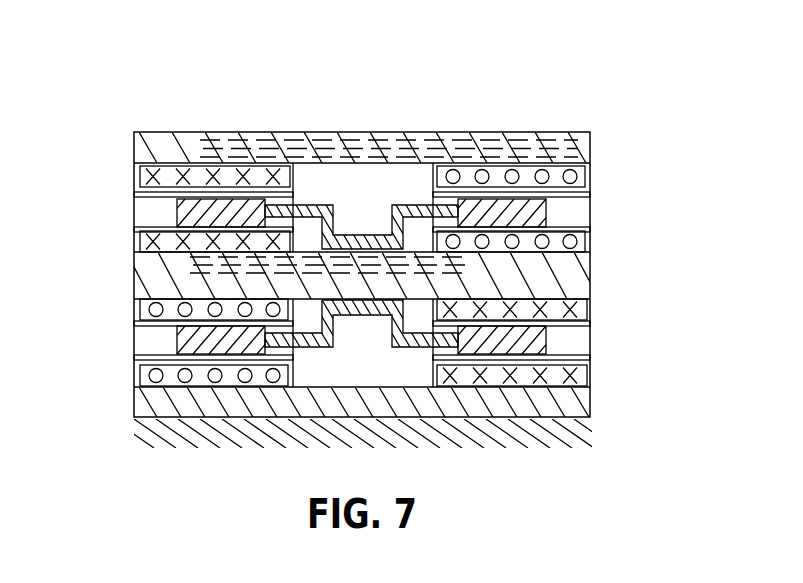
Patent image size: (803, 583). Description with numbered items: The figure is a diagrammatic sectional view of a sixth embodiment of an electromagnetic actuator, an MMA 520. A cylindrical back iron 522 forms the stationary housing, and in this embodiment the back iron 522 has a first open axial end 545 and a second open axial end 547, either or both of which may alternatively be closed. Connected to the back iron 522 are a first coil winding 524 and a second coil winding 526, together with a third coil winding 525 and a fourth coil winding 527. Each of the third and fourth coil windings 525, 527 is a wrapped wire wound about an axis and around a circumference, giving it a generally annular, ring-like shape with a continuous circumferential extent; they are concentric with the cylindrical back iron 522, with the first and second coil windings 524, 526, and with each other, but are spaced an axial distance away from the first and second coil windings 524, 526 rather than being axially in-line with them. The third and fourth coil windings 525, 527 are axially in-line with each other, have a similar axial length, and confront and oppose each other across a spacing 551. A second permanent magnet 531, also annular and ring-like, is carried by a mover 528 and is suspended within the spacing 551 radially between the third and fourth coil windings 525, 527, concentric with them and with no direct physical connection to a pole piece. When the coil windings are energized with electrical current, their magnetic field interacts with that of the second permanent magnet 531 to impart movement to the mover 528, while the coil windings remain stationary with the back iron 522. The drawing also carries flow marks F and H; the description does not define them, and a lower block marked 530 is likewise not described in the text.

The MMA 520 is at (328, 100).
The back iron 522 is at (442, 132).
The first coil winding 524 is at (574, 175).
The third coil winding 525 is at (140, 172).
The second coil winding 526 is at (584, 240).
The fourth coil winding 527 is at (140, 243).
The mover 528 is at (408, 203).
The magnet 530 is at (552, 337).
The second permanent magnet 531 is at (174, 208).
The first open axial end 545 is at (567, 150).
The second open axial end 547 is at (151, 151).
The spacing 551 is at (157, 342).
The fluid flow F is at (450, 152).
The heat flow H is at (240, 298).